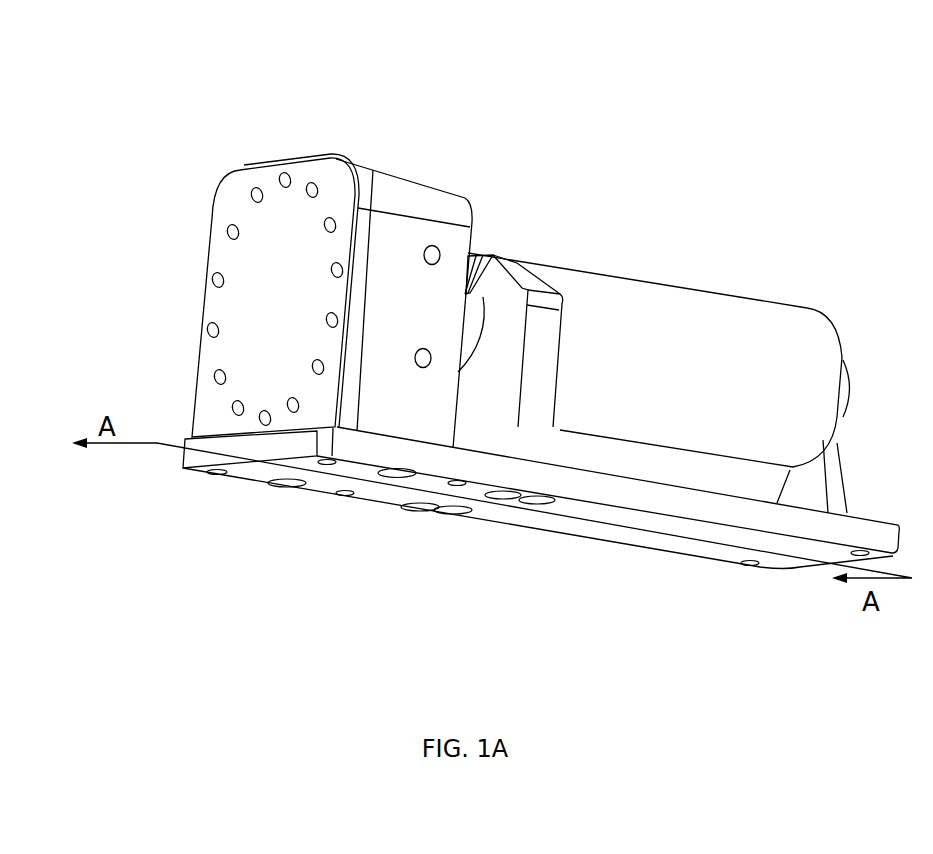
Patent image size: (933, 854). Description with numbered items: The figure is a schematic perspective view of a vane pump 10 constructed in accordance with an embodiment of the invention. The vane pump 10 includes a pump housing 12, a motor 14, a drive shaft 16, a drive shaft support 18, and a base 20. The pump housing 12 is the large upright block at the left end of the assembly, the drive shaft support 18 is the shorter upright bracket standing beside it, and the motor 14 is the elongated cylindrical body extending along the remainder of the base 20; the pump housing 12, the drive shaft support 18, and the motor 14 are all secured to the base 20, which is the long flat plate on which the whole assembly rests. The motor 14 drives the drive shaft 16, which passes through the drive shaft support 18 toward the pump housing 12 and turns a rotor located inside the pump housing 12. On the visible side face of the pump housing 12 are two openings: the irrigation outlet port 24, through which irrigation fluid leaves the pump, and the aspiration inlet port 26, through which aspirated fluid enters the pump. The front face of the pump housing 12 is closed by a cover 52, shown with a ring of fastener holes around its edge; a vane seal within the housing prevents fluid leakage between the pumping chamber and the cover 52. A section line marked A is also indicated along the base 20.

The vane pump 10 is at (614, 222).
The pump housing 12 is at (262, 163).
The motor 14 is at (720, 290).
The drive shaft 16 is at (469, 296).
The drive shaft support 18 is at (537, 270).
The base 20 is at (542, 527).
The irrigation outlet port 24 is at (432, 245).
The aspiration inlet port 26 is at (418, 370).
The cover 52 is at (227, 253).